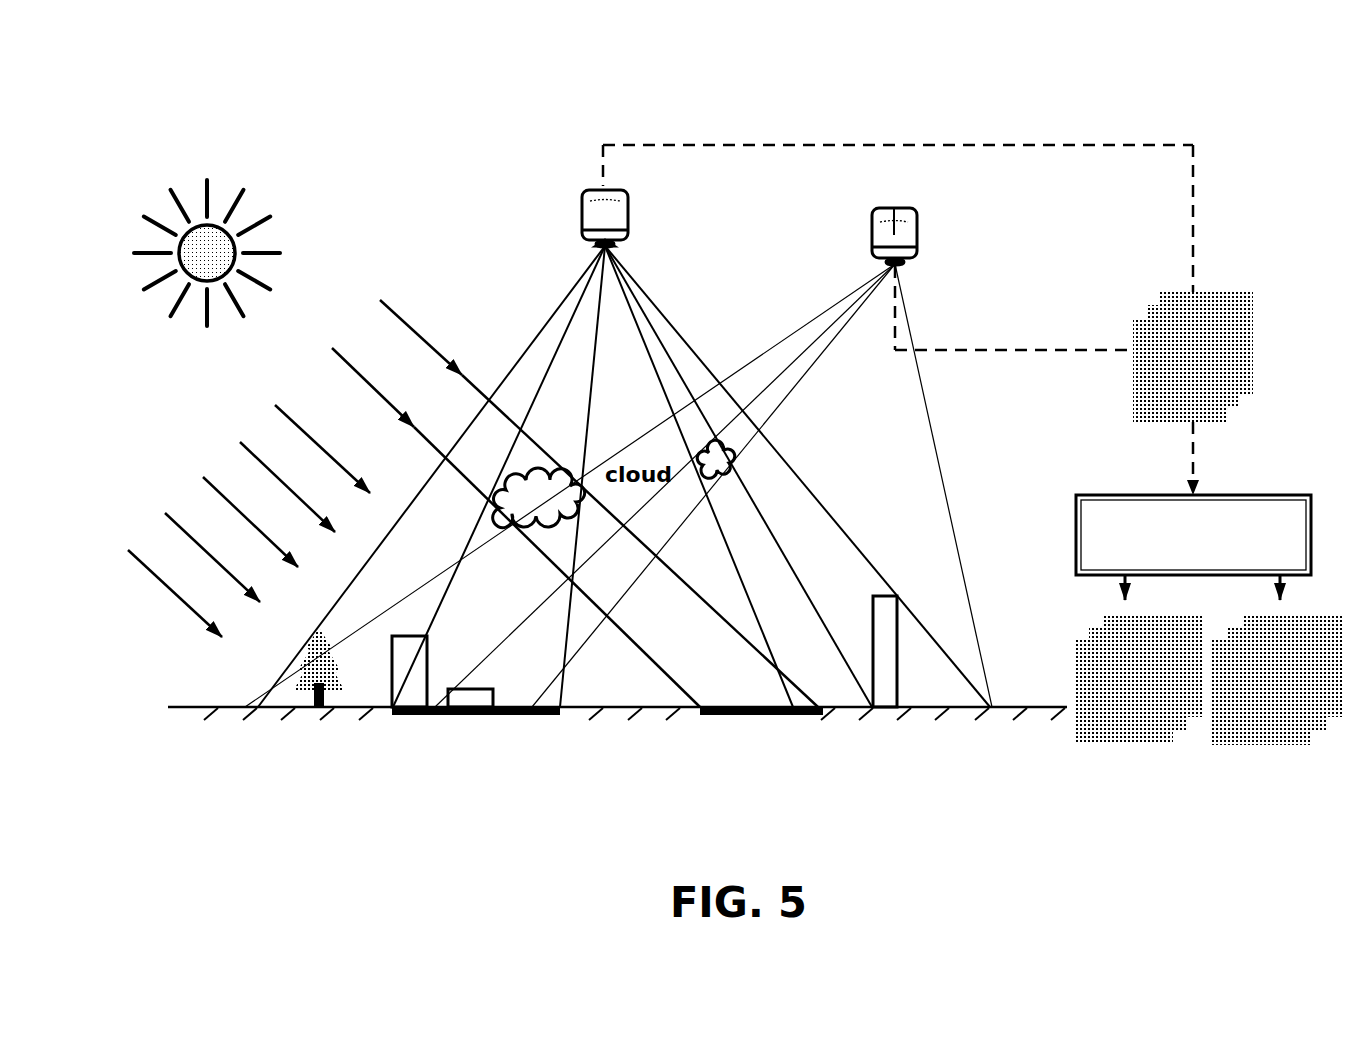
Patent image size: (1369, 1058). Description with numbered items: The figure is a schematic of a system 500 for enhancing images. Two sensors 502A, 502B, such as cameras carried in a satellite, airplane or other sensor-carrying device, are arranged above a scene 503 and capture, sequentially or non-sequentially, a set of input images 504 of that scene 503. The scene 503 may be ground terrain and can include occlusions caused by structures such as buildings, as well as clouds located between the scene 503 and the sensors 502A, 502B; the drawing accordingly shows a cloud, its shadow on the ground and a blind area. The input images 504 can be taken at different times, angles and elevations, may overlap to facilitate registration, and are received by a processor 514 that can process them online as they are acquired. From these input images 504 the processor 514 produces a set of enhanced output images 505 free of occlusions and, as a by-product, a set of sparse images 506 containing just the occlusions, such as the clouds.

The system for enhancing images 500 is at (284, 74).
The sensor 502A is at (590, 190).
The sensor 502B is at (873, 210).
The scene 503 is at (1048, 748).
The input images 504 is at (1218, 292).
The processor 514 is at (1243, 495).
The enhanced output images 505 is at (1138, 732).
The sparse images 506 is at (1233, 735).